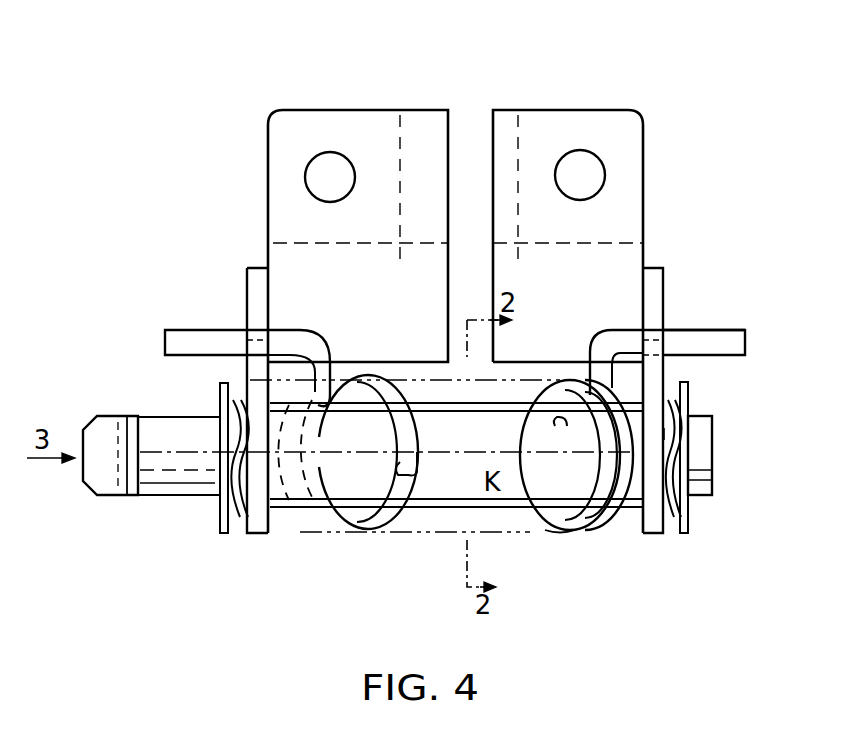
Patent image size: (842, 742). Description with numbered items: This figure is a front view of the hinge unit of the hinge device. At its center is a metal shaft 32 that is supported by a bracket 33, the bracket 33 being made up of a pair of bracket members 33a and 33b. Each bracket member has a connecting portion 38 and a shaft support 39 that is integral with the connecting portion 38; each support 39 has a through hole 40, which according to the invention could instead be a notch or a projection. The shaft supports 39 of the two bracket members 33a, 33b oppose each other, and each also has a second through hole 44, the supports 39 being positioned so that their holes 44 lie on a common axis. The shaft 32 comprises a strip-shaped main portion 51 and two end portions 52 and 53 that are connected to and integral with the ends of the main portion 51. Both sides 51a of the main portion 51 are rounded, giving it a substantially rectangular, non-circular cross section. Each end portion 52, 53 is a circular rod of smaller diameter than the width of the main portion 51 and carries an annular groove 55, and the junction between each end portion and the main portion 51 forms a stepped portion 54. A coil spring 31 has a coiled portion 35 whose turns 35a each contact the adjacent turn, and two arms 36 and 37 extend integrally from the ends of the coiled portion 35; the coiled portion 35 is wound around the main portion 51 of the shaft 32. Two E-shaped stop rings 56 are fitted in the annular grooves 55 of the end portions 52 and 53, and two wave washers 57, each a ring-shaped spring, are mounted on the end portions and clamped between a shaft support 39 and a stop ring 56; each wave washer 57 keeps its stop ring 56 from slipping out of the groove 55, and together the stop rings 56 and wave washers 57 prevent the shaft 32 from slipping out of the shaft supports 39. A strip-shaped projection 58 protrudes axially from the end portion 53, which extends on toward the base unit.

The bracket 33 is at (455, 270).
The bracket member 33a is at (568, 295).
The bracket member 33b is at (403, 110).
The connecting portion 38 is at (277, 193).
The shaft support 39 is at (260, 533).
The through hole 40 is at (258, 330).
The arm 37 is at (228, 338).
The arm 36 is at (728, 348).
The stepped portion 54 is at (297, 390).
The main portion 51 is at (450, 490).
The sides of the main portion 51a is at (420, 390).
The shaft 32 is at (497, 503).
The coiled portion 35 is at (380, 530).
The turns 35a is at (418, 436).
The coil spring 31 is at (568, 528).
The through hole 44 is at (220, 432).
The strip-shaped projection 58 is at (111, 500).
The end portion 52 is at (185, 500).
The E-shaped stop ring 56 is at (220, 395).
The annular groove 55 is at (210, 497).
The wave washer 57 is at (228, 525).
The end portion 53 is at (702, 458).